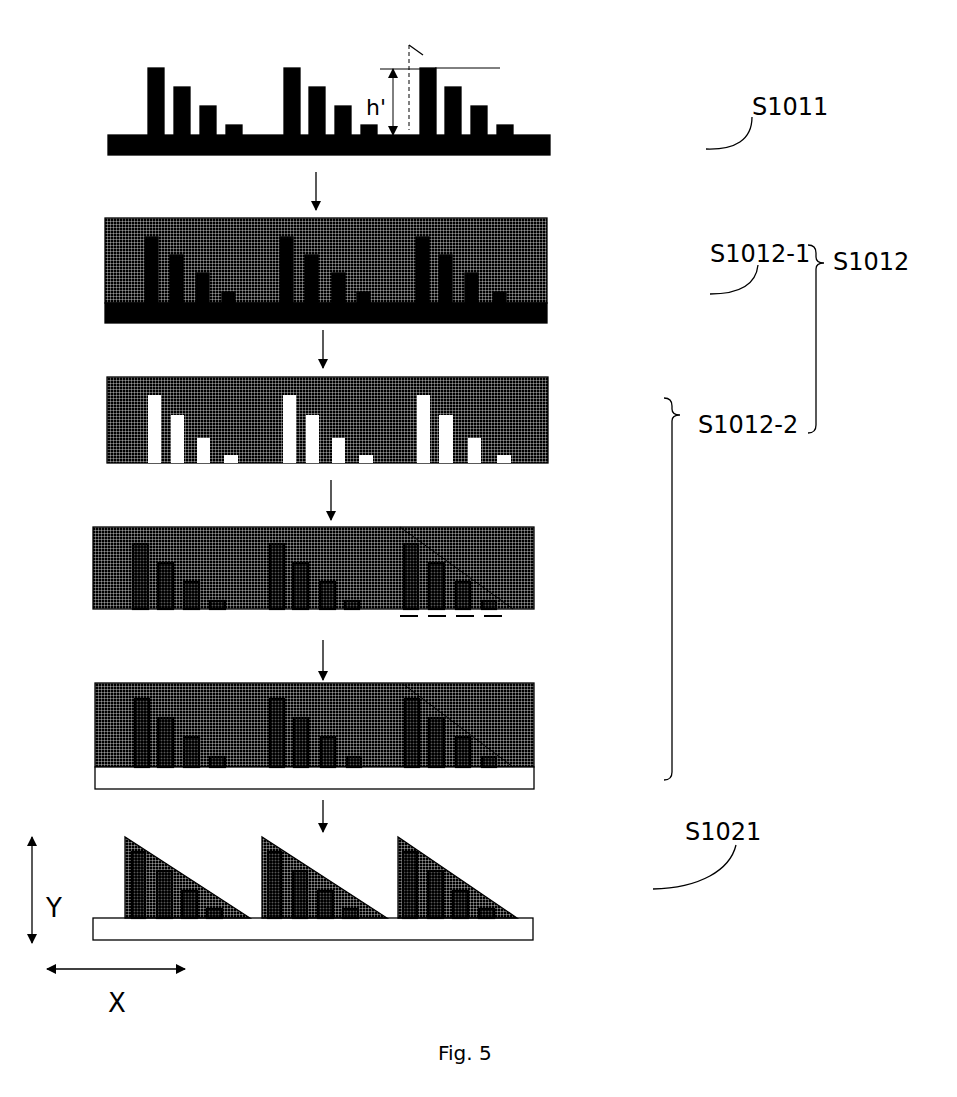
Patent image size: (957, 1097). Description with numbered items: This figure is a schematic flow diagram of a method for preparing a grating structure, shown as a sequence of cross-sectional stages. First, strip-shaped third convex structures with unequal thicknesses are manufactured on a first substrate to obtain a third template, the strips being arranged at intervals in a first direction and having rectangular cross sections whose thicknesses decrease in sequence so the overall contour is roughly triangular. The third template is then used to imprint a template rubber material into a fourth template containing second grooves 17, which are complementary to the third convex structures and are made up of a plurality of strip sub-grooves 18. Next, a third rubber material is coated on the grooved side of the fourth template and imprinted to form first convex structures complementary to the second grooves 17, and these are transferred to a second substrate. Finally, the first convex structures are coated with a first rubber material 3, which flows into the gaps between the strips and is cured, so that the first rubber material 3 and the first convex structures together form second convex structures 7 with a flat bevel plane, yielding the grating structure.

The first rubber material 3 is at (440, 864).
The second convex structures 7 is at (382, 877).
The second grooves 17 is at (407, 429).
The strip sub-grooves 18 is at (447, 429).